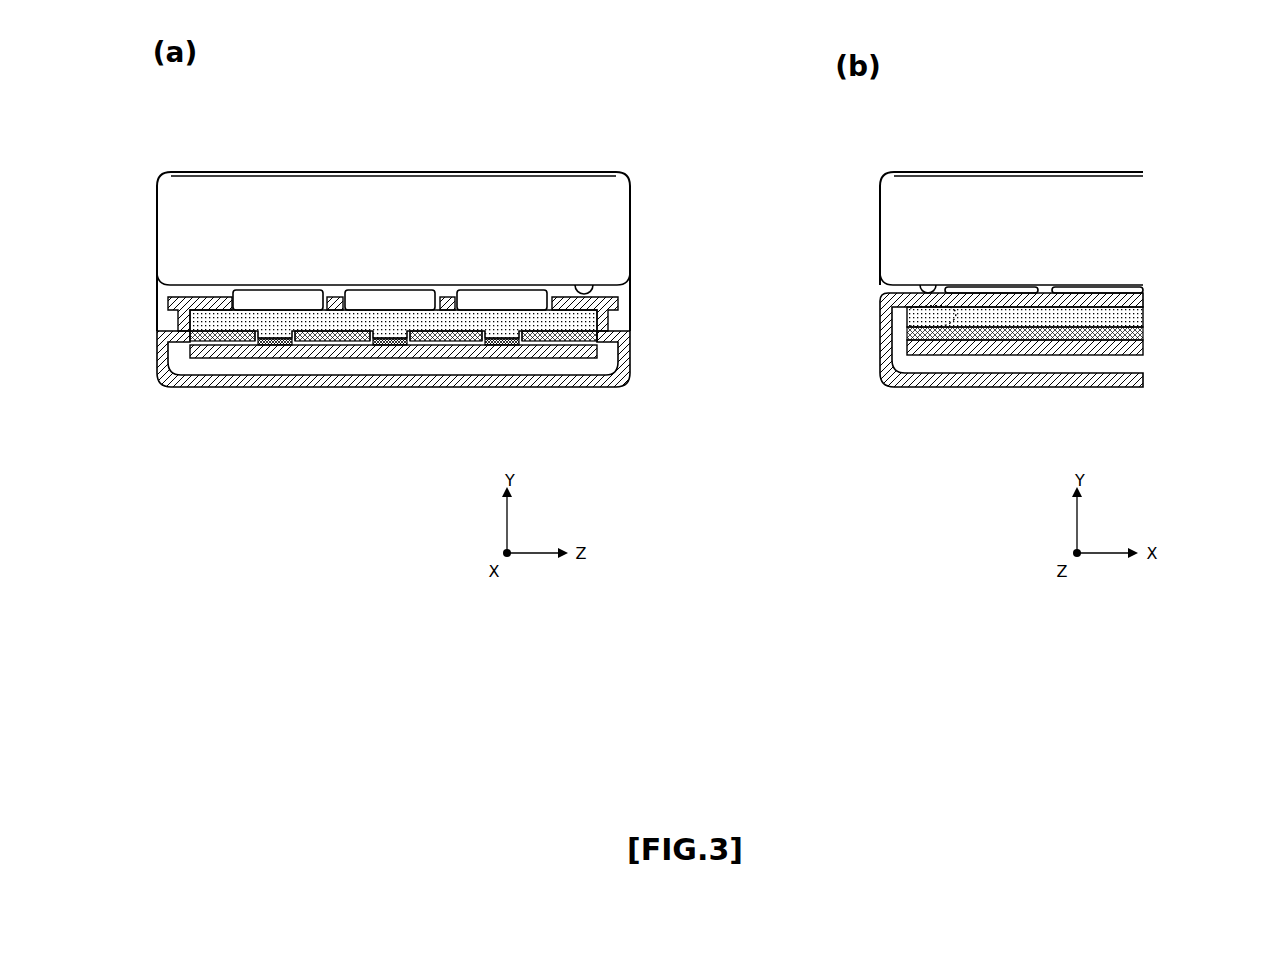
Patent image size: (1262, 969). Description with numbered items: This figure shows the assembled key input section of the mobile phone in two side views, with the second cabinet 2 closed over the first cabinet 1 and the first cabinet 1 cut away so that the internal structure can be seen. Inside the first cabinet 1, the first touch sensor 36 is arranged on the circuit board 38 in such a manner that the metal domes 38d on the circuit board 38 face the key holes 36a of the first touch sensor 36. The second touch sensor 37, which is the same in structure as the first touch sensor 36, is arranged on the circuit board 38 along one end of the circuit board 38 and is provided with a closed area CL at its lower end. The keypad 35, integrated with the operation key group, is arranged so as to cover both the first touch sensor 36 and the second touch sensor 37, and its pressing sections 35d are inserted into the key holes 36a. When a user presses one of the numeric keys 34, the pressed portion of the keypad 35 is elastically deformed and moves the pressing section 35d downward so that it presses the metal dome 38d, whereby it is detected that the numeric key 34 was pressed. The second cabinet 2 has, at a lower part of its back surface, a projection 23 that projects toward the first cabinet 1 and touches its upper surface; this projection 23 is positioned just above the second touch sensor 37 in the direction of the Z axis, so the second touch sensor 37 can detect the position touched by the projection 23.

The first cabinet 1 is at (157, 356).
The second cabinet 2 is at (157, 212).
The projection 23 is at (586, 287).
The numeric key 34 is at (276, 296).
The keypad 35 is at (216, 316).
The pressing section 35d is at (280, 336).
The first touch sensor 36 is at (222, 341).
The key hole 36a is at (313, 341).
The second touch sensor 37 is at (598, 335).
The circuit board 38 is at (246, 352).
The metal dome 38d is at (275, 346).
The closed area CL is at (907, 317).